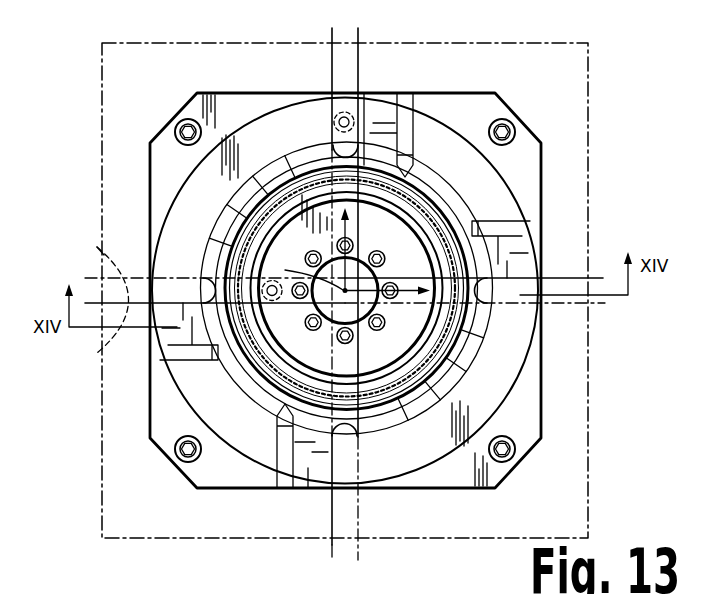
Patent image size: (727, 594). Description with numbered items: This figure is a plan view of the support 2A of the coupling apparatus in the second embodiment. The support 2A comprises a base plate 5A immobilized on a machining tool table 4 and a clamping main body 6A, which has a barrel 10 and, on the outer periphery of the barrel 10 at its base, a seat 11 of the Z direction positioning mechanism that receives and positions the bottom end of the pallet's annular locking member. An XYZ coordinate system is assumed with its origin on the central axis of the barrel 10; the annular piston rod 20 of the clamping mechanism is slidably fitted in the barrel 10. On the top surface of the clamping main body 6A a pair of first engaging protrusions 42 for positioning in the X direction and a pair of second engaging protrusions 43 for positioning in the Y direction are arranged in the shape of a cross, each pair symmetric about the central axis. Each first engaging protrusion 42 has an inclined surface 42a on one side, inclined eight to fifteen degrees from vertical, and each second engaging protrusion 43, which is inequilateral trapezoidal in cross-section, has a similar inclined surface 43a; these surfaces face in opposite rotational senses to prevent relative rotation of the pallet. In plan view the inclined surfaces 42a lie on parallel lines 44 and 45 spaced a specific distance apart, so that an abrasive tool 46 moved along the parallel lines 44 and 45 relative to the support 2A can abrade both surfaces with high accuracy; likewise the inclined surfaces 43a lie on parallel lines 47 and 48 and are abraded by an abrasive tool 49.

The support 2A is at (518, 86).
The machining tool table 4 is at (590, 72).
The base plate 5A is at (543, 160).
The clamping main body 6A is at (512, 194).
The barrel 10 is at (453, 390).
The seat 11 is at (403, 393).
The piston rod 20 is at (440, 322).
The first engaging protrusion 42 is at (385, 122).
The inclined surface 42a is at (352, 93).
The second engaging protrusion 43 is at (187, 335).
The inclined surface 43a is at (181, 300).
The parallel line 44 is at (358, 74).
The parallel line 45 is at (332, 66).
The abrasive tool 46 is at (330, 124).
The parallel line 47 is at (100, 250).
The parallel line 48 is at (107, 353).
The abrasive tool 49 is at (290, 270).